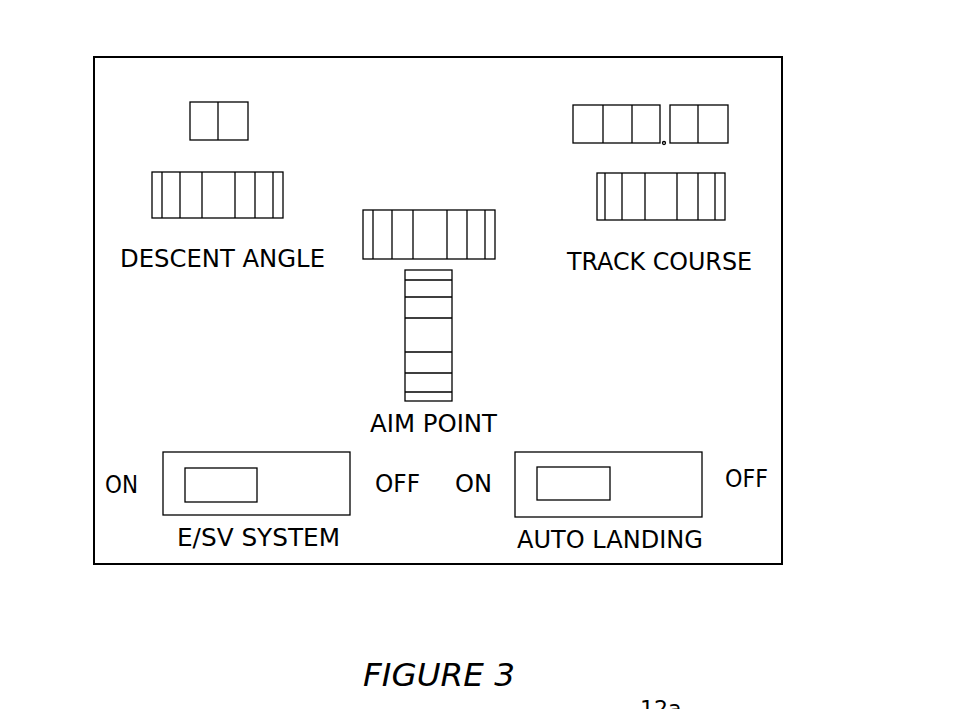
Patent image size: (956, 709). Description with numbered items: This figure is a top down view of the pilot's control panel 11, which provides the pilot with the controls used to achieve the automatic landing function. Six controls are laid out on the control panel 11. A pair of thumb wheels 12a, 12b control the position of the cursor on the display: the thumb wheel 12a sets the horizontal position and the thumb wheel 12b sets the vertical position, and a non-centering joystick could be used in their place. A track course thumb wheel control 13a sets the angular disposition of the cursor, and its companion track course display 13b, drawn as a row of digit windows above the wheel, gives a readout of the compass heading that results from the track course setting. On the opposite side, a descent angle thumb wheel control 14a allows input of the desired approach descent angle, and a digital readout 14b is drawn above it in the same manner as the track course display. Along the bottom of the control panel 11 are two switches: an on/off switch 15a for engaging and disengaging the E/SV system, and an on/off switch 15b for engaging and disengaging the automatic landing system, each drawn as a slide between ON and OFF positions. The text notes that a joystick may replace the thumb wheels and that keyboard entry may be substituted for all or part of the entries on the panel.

The control panel 11 is at (320, 565).
The thumb wheel 12a is at (448, 210).
The thumb wheel 12b is at (405, 292).
The track course thumb wheel control 13a is at (678, 207).
The track course display 13b is at (730, 132).
The descent angle thumb wheel control 14a is at (192, 212).
The descent angle digital display 14b is at (190, 120).
The on/off switch 15a is at (213, 502).
The on/off switch 15b is at (560, 500).